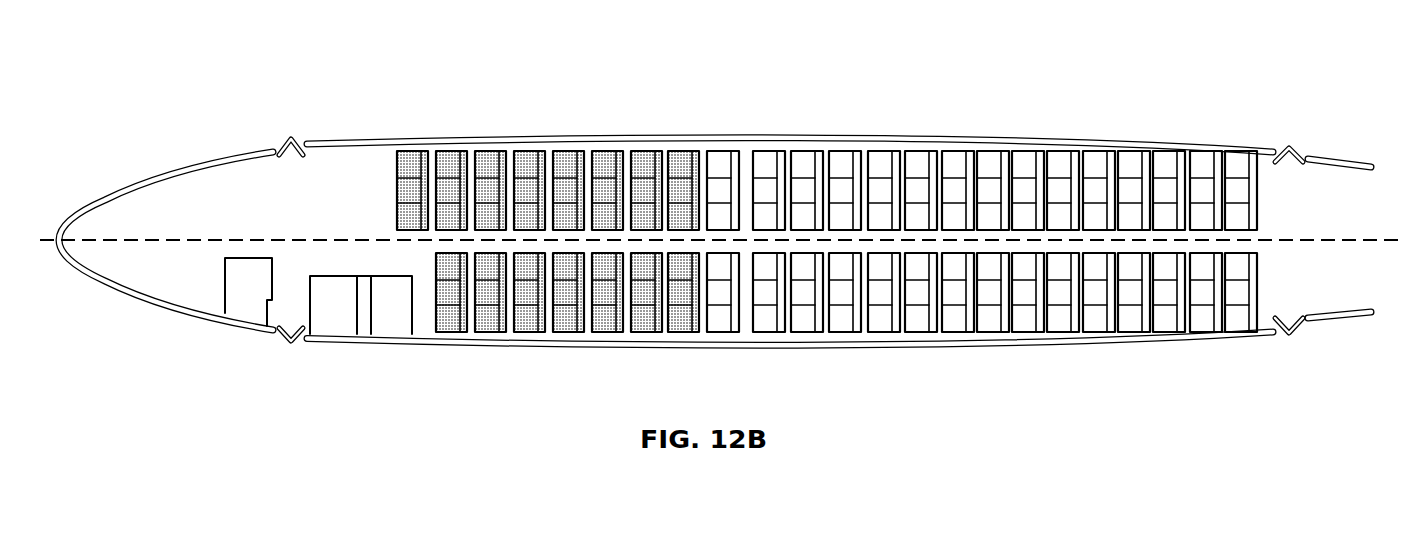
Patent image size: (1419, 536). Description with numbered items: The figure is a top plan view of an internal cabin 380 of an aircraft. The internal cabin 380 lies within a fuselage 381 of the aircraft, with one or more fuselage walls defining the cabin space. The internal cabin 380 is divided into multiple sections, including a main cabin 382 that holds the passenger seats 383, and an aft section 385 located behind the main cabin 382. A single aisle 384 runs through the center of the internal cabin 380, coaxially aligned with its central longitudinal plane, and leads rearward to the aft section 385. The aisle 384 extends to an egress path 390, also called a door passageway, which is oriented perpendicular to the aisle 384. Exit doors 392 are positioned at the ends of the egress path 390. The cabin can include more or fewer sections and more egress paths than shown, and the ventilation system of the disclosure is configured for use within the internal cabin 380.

The internal cabin 380 is at (310, 85).
The fuselage 381 is at (513, 142).
The main cabin 382 is at (452, 167).
The passenger seats 383 is at (722, 170).
The single aisle 384 is at (845, 235).
The aft section 385 is at (1275, 175).
The egress path 390 is at (1270, 192).
The exit doors 392 is at (1298, 158).